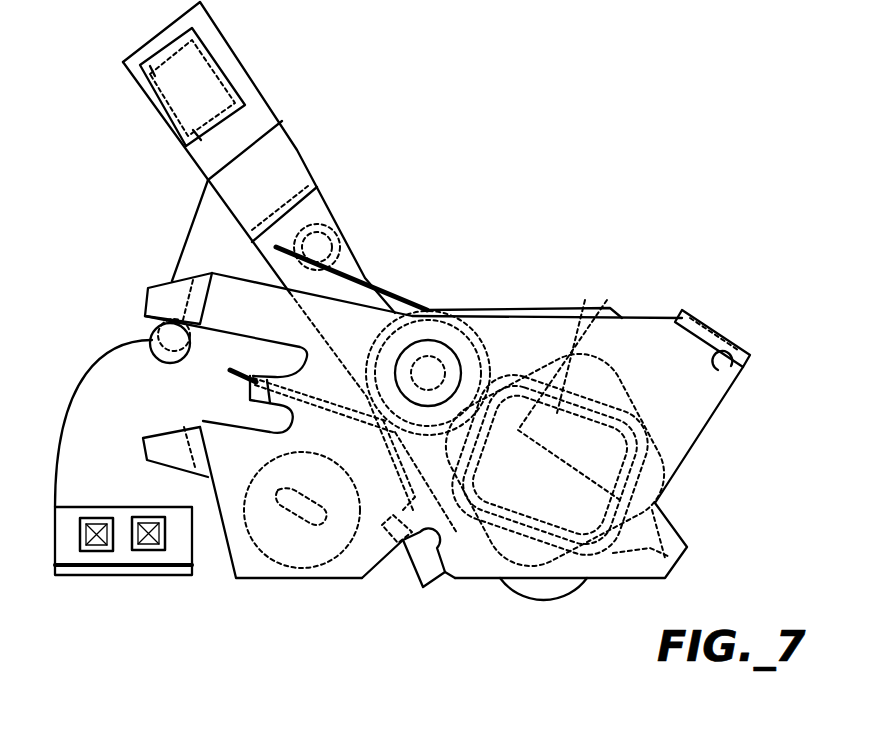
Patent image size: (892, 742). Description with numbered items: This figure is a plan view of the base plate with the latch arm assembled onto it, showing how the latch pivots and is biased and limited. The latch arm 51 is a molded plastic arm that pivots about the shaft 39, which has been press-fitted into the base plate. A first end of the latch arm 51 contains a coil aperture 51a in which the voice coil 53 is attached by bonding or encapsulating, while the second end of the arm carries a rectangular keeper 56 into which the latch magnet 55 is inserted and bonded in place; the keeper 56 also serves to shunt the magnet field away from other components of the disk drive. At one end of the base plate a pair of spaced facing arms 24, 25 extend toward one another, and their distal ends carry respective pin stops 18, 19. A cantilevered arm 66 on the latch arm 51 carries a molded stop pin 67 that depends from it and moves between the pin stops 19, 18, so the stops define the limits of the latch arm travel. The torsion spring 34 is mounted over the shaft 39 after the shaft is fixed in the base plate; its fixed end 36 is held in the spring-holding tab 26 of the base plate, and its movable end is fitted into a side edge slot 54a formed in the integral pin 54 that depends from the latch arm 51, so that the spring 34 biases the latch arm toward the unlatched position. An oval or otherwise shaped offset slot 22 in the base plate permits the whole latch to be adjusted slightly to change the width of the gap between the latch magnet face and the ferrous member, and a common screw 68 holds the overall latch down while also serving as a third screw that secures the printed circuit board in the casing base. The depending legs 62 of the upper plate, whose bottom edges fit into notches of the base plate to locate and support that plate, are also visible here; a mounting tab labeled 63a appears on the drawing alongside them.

The pin stop 18 is at (150, 313).
The pin stop 19 is at (172, 428).
The offset slot 22 is at (297, 522).
The facing arm 24 is at (160, 283).
The facing arm 25 is at (200, 475).
The spring-holding tab 26 is at (253, 406).
The torsion spring 34 is at (398, 314).
The fixed end 36 is at (237, 373).
The shaft 39 is at (419, 340).
The latch arm 51 is at (292, 162).
The coil aperture 51a is at (607, 300).
The voice coil 53 is at (683, 477).
The pin 54 is at (347, 230).
The side edge slot 54a is at (335, 208).
The latch magnet 55 is at (166, 112).
The keeper 56 is at (141, 57).
The depending leg 62 is at (680, 560).
The mounting tab 63a is at (743, 352).
The cantilevered arm 66 is at (193, 236).
The stop pin 67 is at (167, 363).
The screw 68 is at (313, 573).